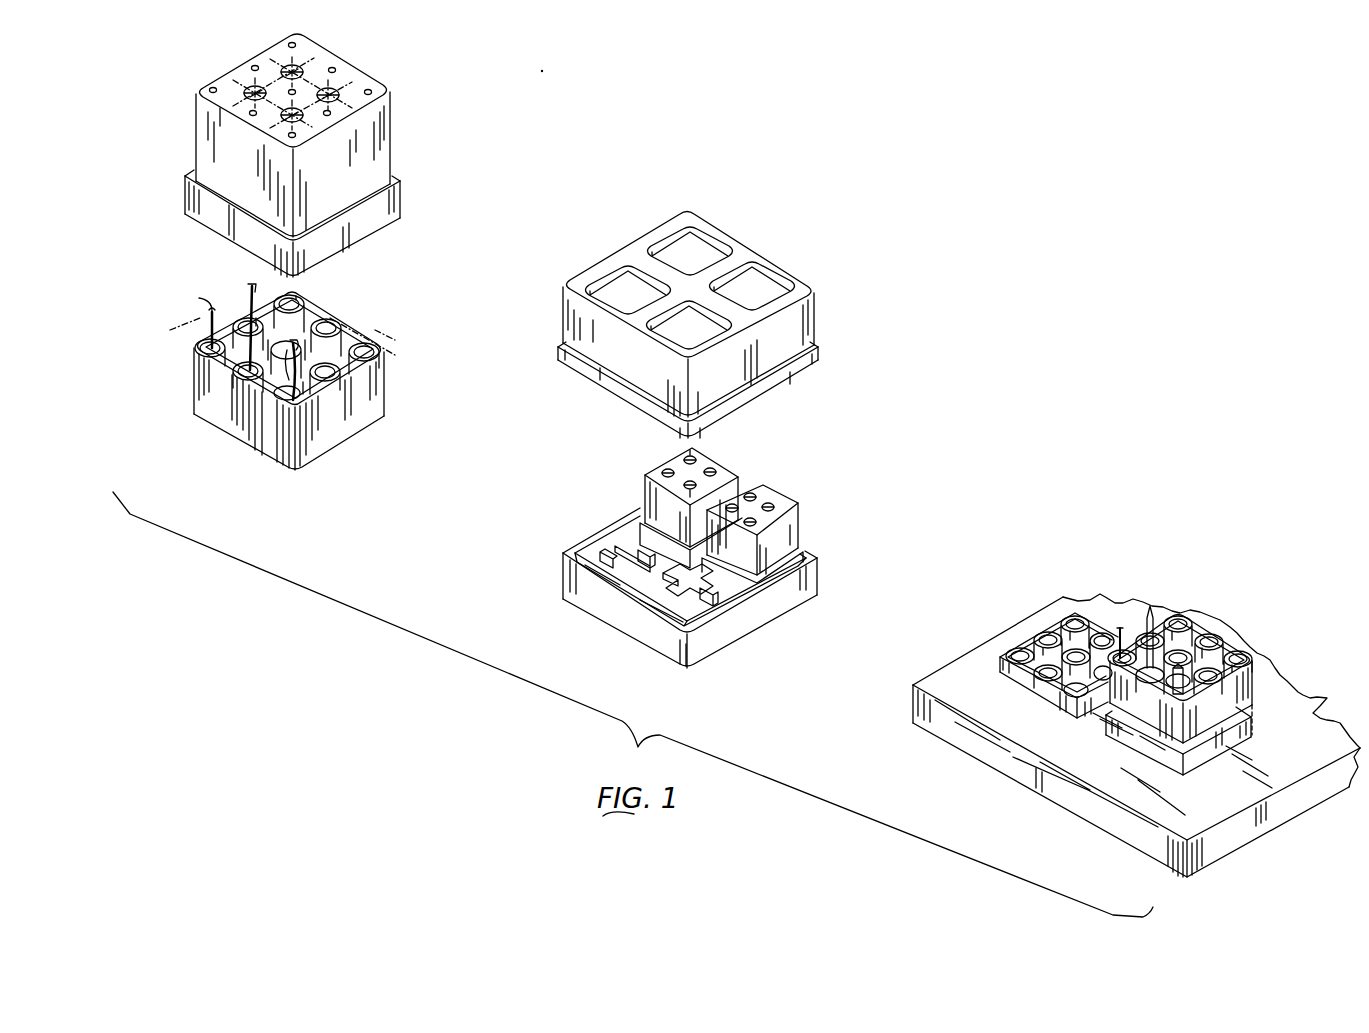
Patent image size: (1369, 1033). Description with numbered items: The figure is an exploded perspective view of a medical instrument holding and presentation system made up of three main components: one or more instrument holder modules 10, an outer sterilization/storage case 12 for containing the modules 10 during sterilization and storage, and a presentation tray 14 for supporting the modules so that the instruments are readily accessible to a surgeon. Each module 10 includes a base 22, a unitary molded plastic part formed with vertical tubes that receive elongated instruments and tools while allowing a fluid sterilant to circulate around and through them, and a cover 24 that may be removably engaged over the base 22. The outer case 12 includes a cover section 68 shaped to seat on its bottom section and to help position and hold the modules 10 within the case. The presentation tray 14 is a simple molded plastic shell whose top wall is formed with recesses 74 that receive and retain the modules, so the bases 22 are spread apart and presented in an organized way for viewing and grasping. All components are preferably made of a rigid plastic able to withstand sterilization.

The instrument holder module 10 is at (166, 67).
The outer sterilization/storage case 12 is at (523, 270).
The presentation tray 14 is at (933, 672).
The base 22 is at (338, 432).
The cover 24 is at (357, 236).
The cover section 68 is at (750, 411).
The recesses 74 is at (1192, 757).